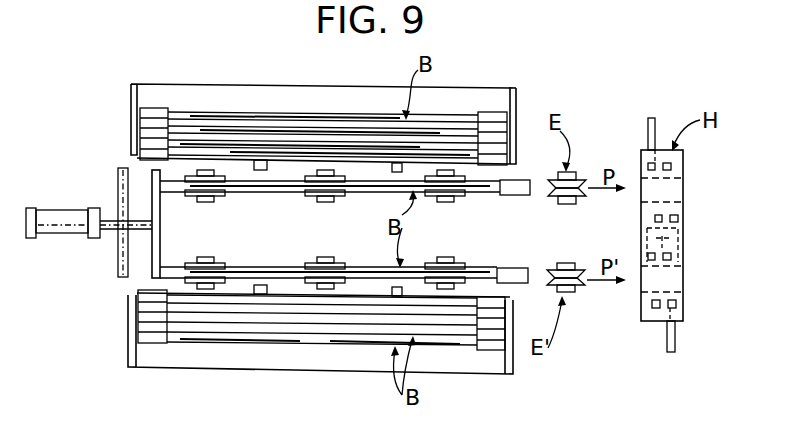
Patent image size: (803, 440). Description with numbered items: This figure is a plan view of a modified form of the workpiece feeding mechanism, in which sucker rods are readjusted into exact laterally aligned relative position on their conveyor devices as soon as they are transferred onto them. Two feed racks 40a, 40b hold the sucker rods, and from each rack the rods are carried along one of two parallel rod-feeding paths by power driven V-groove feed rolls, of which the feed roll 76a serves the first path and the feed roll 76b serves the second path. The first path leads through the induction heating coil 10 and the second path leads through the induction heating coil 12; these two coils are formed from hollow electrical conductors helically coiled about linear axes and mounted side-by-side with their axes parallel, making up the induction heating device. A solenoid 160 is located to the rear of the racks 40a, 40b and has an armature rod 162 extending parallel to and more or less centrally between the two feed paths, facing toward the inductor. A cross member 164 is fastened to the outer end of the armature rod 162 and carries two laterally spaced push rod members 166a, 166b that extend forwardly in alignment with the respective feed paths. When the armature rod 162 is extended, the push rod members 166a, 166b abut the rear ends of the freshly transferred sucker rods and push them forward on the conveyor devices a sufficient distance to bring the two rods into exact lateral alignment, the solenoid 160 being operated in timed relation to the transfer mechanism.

The feed rack 40a is at (308, 85).
The feed rack 40b is at (220, 370).
The cross member 164 is at (153, 183).
The solenoid 160 is at (66, 216).
The armature rod 162 is at (110, 229).
The push rod member 166a is at (172, 191).
The push rod member 166b is at (172, 266).
The feed roll 76a is at (578, 180).
The feed roll 76b is at (578, 288).
The induction heating coil 10 is at (672, 162).
The induction heating coil 12 is at (685, 306).